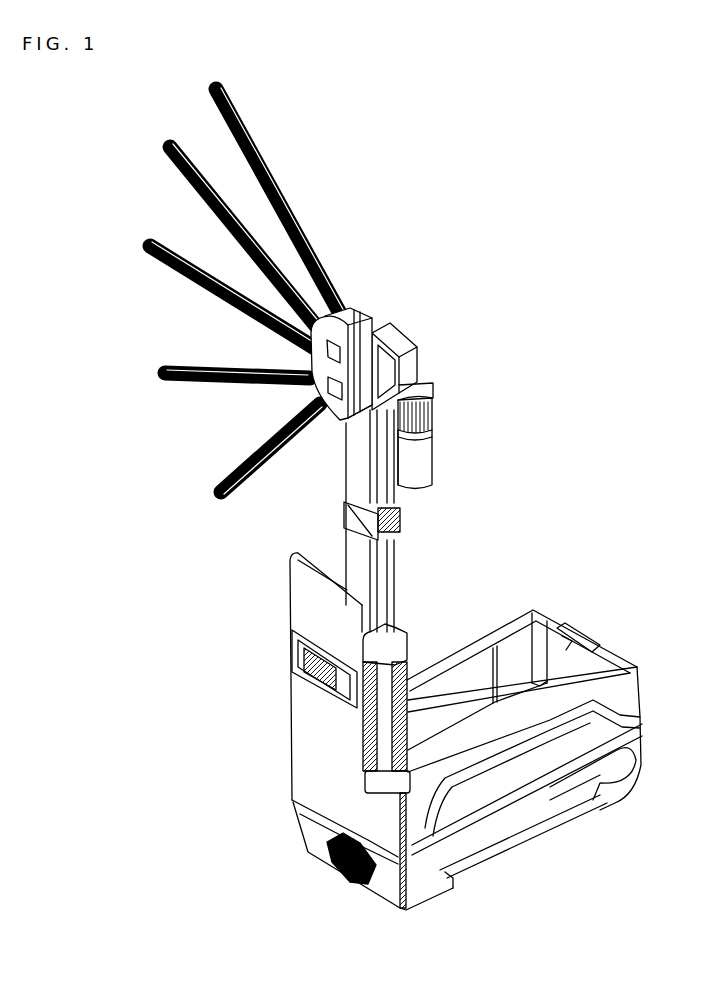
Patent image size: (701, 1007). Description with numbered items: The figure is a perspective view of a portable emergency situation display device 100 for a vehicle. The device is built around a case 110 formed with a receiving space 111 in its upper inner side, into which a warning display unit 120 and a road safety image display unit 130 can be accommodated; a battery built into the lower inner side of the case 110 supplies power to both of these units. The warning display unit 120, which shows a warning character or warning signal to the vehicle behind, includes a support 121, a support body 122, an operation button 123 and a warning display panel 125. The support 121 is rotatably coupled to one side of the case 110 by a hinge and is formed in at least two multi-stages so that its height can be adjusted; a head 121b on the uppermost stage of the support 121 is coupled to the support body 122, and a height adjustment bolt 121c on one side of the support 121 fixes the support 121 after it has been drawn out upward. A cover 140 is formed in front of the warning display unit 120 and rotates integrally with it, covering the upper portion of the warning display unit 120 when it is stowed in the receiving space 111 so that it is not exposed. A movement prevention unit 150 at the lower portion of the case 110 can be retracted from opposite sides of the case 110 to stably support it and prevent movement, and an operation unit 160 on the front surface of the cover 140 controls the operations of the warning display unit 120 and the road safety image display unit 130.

The portable emergency situation display device 100 is at (236, 575).
The case 110 is at (548, 803).
The receiving space 111 is at (562, 660).
The warning display unit 120 is at (401, 335).
The support 121 is at (394, 571).
The head 121b is at (412, 367).
The height adjustment bolt 121c is at (400, 527).
The support body 122 is at (350, 310).
The operation button 123 is at (326, 390).
The warning display panel 125 is at (278, 188).
The road safety image display unit 130 is at (420, 455).
The cover 140 is at (320, 747).
The movement prevention unit 150 is at (455, 893).
The operation unit 160 is at (295, 660).